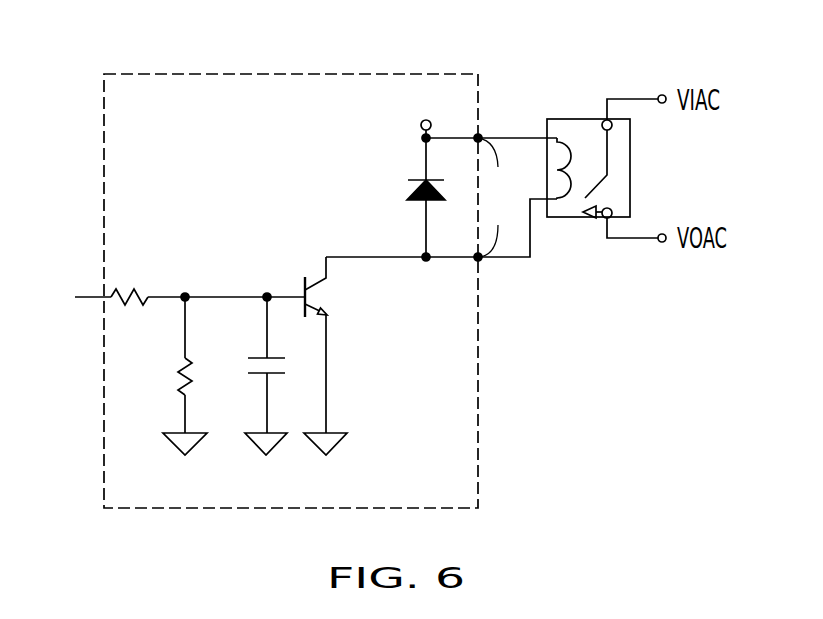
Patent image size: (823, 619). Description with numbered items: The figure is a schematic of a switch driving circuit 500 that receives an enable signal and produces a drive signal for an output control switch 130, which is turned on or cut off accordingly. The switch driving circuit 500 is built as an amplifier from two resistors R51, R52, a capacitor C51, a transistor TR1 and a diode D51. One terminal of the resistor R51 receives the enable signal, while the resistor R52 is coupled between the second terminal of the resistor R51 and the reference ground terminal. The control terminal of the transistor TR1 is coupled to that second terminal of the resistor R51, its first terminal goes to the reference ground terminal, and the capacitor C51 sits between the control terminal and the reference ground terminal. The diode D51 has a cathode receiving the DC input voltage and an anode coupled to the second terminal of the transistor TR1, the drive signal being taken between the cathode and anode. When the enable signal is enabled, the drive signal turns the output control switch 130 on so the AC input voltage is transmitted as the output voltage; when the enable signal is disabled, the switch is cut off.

The switch driving circuit 500 is at (300, 254).
The output control switch 130 is at (568, 119).
The resistor R51 is at (135, 279).
The resistor R52 is at (162, 377).
The capacitor C51 is at (247, 376).
The transistor TR1 is at (336, 287).
The diode D51 is at (438, 209).